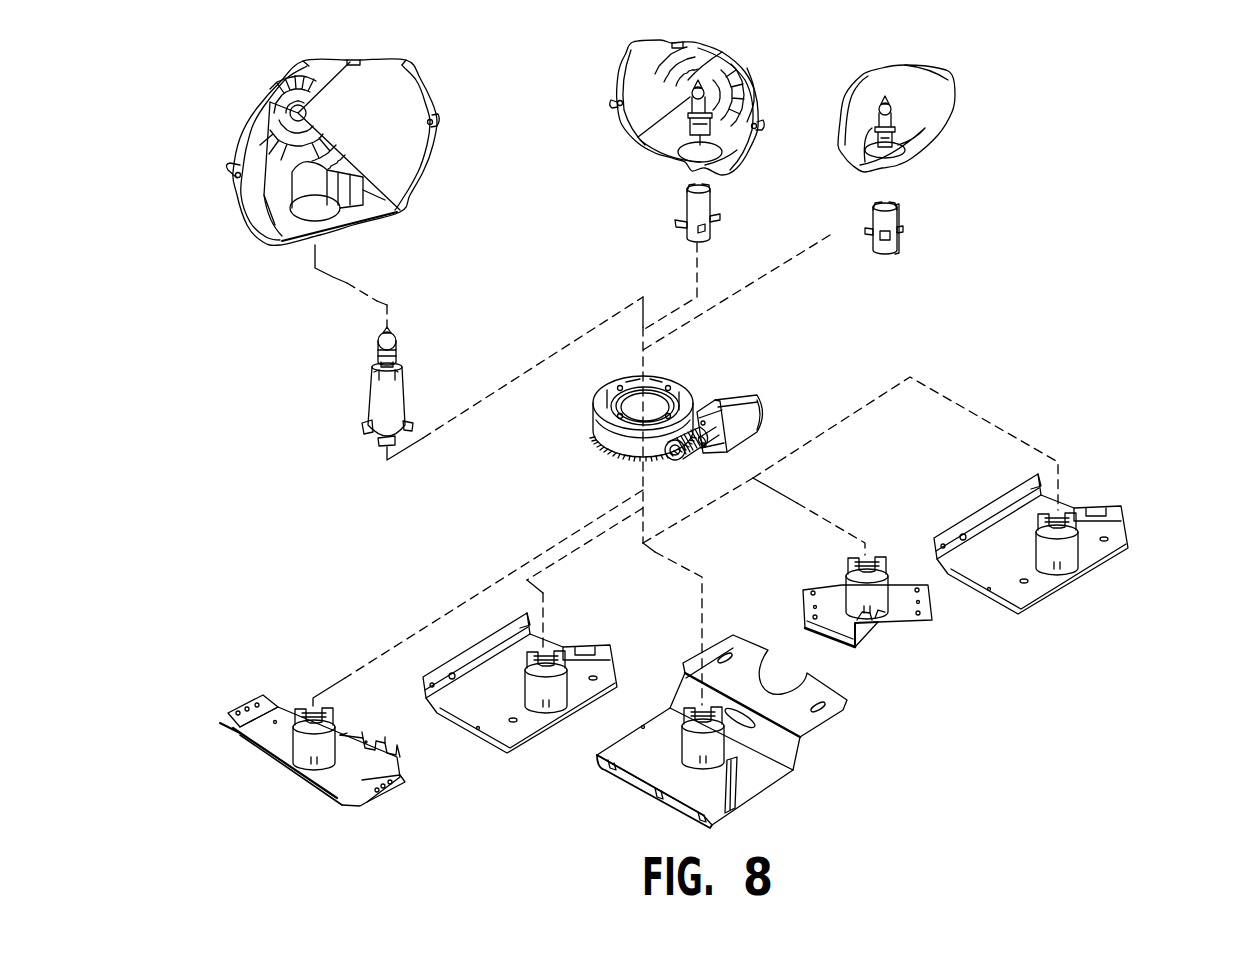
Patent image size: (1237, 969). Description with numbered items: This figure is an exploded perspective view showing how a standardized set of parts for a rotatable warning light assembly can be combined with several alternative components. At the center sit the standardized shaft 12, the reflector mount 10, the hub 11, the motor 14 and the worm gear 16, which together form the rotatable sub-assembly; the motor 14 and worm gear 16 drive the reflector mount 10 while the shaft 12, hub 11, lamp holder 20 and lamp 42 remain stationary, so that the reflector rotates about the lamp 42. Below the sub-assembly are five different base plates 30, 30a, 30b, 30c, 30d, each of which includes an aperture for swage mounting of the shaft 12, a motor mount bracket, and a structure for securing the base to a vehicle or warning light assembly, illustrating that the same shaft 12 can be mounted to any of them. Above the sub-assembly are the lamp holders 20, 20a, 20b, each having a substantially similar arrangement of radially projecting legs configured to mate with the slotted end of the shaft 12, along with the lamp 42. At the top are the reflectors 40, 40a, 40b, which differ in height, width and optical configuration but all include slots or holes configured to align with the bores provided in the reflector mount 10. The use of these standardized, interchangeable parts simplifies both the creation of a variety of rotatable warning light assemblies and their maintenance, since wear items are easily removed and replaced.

The reflector mount 10 is at (616, 419).
The hub 11 is at (627, 405).
The standardized shaft 12 is at (307, 713).
The motor 14 is at (727, 393).
The worm gear 16 is at (695, 462).
The lamp holder 20 is at (373, 397).
The lamp holder 20a is at (677, 194).
The lamp holder 20b is at (900, 220).
The base plate 30 is at (232, 723).
The base plate 30a is at (467, 737).
The base plate 30b is at (803, 735).
The base plate 30c is at (922, 623).
The base plate 30d is at (1130, 533).
The reflector 40 is at (247, 126).
The reflector 40a is at (747, 79).
The reflector 40b is at (953, 90).
The lamp 42 is at (393, 350).